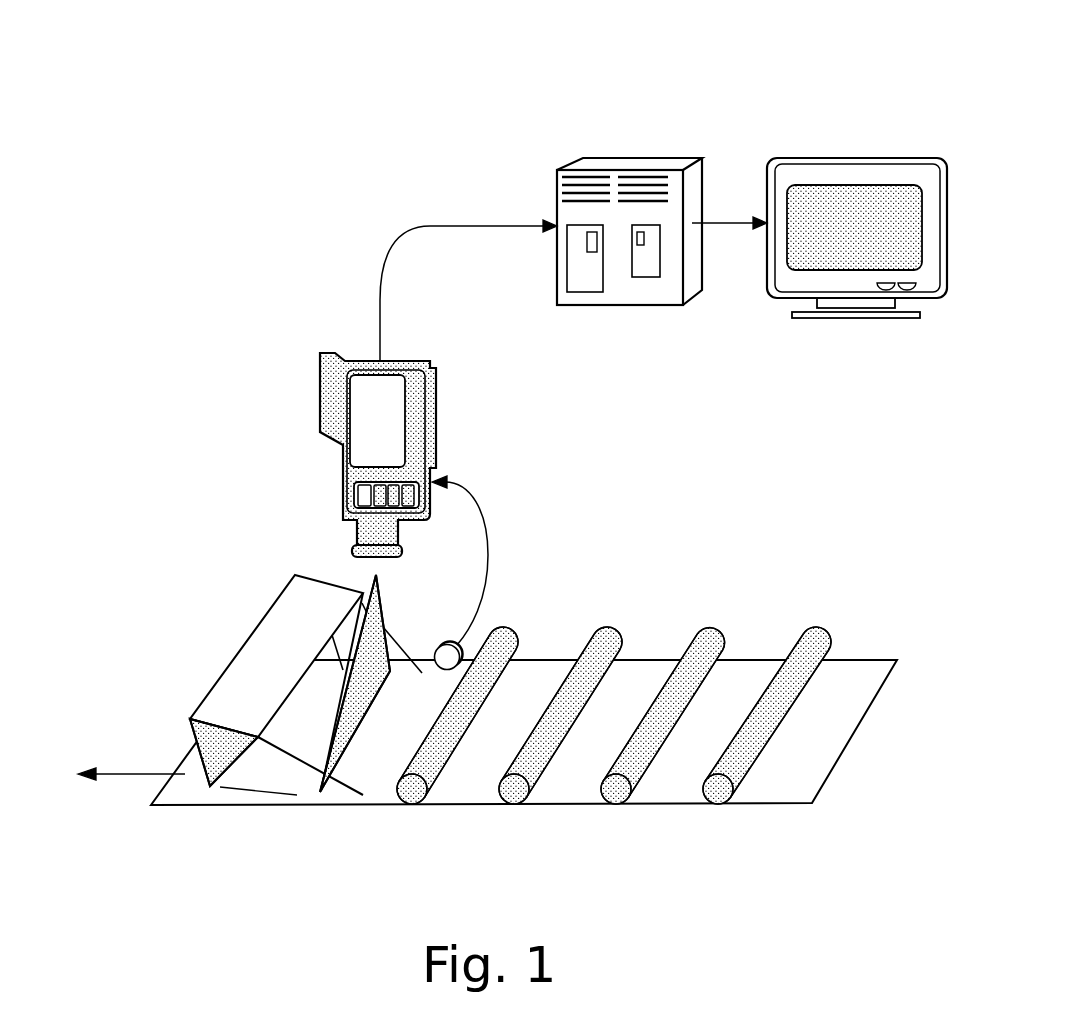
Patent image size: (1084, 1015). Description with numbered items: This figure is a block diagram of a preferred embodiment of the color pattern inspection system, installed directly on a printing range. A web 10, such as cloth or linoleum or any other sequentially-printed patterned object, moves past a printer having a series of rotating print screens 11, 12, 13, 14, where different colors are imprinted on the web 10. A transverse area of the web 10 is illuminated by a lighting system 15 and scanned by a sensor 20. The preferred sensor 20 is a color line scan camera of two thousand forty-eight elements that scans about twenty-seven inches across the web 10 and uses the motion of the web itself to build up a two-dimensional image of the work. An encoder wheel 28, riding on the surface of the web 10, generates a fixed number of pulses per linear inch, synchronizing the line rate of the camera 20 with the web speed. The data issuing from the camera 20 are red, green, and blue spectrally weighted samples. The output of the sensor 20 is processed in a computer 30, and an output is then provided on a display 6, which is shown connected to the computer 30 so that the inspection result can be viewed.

The display monitor 6 is at (878, 170).
The web 10 is at (367, 803).
The rotating print screen 11 is at (508, 648).
The rotating print screen 12 is at (607, 650).
The rotating print screen 13 is at (700, 658).
The rotating print screen 14 is at (813, 650).
The lighting system 15 is at (252, 665).
The sensor 20 is at (416, 388).
The encoder wheel 28 is at (447, 647).
The computer 30 is at (627, 166).